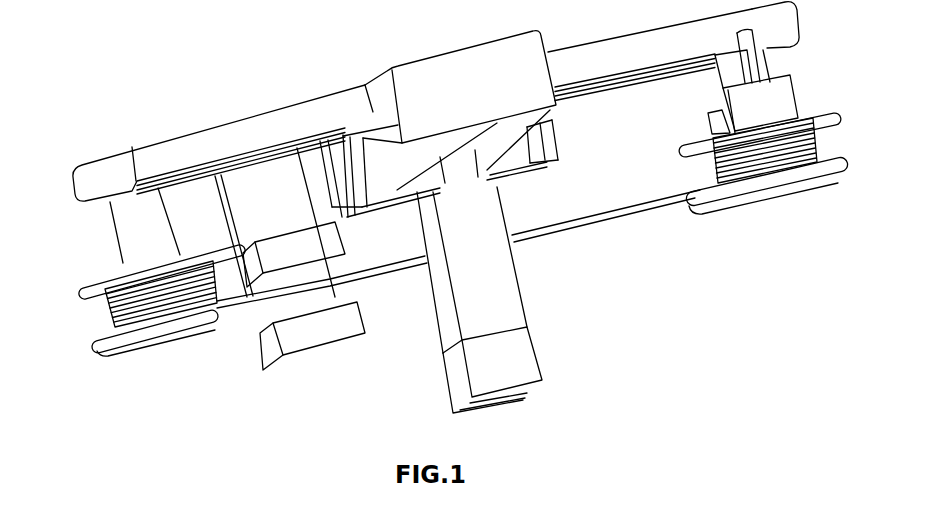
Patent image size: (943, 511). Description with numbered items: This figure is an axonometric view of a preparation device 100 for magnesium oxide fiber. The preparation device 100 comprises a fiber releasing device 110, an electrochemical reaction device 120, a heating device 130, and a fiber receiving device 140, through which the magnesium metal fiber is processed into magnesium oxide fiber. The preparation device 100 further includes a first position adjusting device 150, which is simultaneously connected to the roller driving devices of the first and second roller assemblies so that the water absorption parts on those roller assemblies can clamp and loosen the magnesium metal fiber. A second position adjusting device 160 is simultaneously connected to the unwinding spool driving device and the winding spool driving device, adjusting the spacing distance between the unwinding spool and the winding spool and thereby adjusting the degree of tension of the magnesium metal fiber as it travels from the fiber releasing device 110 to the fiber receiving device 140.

The preparation device 100 is at (262, 90).
The fiber releasing device 110 is at (695, 203).
The electrochemical reaction device 120 is at (528, 328).
The heating device 130 is at (259, 336).
The fiber receiving device 140 is at (92, 346).
The first position adjusting device 150 is at (432, 45).
The second position adjusting device 160 is at (158, 138).